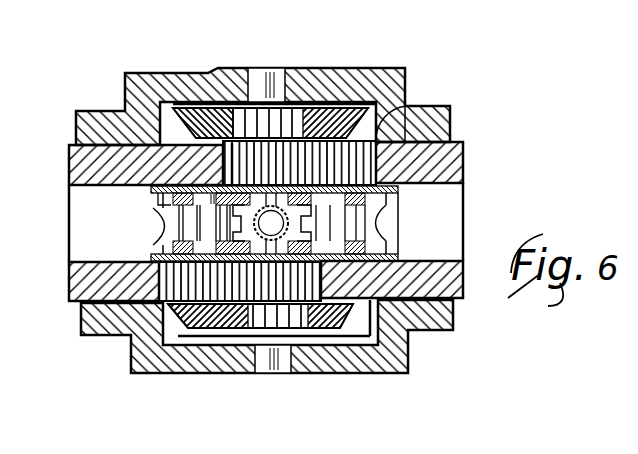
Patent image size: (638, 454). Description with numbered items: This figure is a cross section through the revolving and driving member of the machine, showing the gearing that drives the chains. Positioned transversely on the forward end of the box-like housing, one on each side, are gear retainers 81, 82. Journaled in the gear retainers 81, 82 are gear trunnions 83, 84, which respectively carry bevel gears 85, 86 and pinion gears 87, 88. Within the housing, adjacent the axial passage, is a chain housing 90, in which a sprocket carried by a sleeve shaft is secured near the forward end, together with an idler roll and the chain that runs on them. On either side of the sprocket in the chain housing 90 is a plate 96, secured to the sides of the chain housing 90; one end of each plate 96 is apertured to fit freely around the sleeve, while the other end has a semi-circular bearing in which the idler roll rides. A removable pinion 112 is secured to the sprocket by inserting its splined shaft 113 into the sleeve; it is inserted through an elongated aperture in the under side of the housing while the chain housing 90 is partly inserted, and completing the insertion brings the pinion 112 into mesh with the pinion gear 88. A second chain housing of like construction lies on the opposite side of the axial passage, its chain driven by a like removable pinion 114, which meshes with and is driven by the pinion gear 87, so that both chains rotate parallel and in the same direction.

The gear retainer 81 is at (443, 102).
The gear retainer 82 is at (446, 322).
The gear trunnion 83 is at (272, 63).
The gear trunnion 84 is at (272, 368).
The bevel gear 85 is at (184, 100).
The bevel gear 86 is at (335, 300).
The pinion gear 87 is at (226, 104).
The pinion gear 88 is at (298, 292).
The chain housing 90 is at (143, 182).
The plate 96 is at (150, 202).
The removable pinion 112 is at (205, 237).
The splined shaft 113 is at (200, 245).
The removable pinion 114 is at (401, 96).